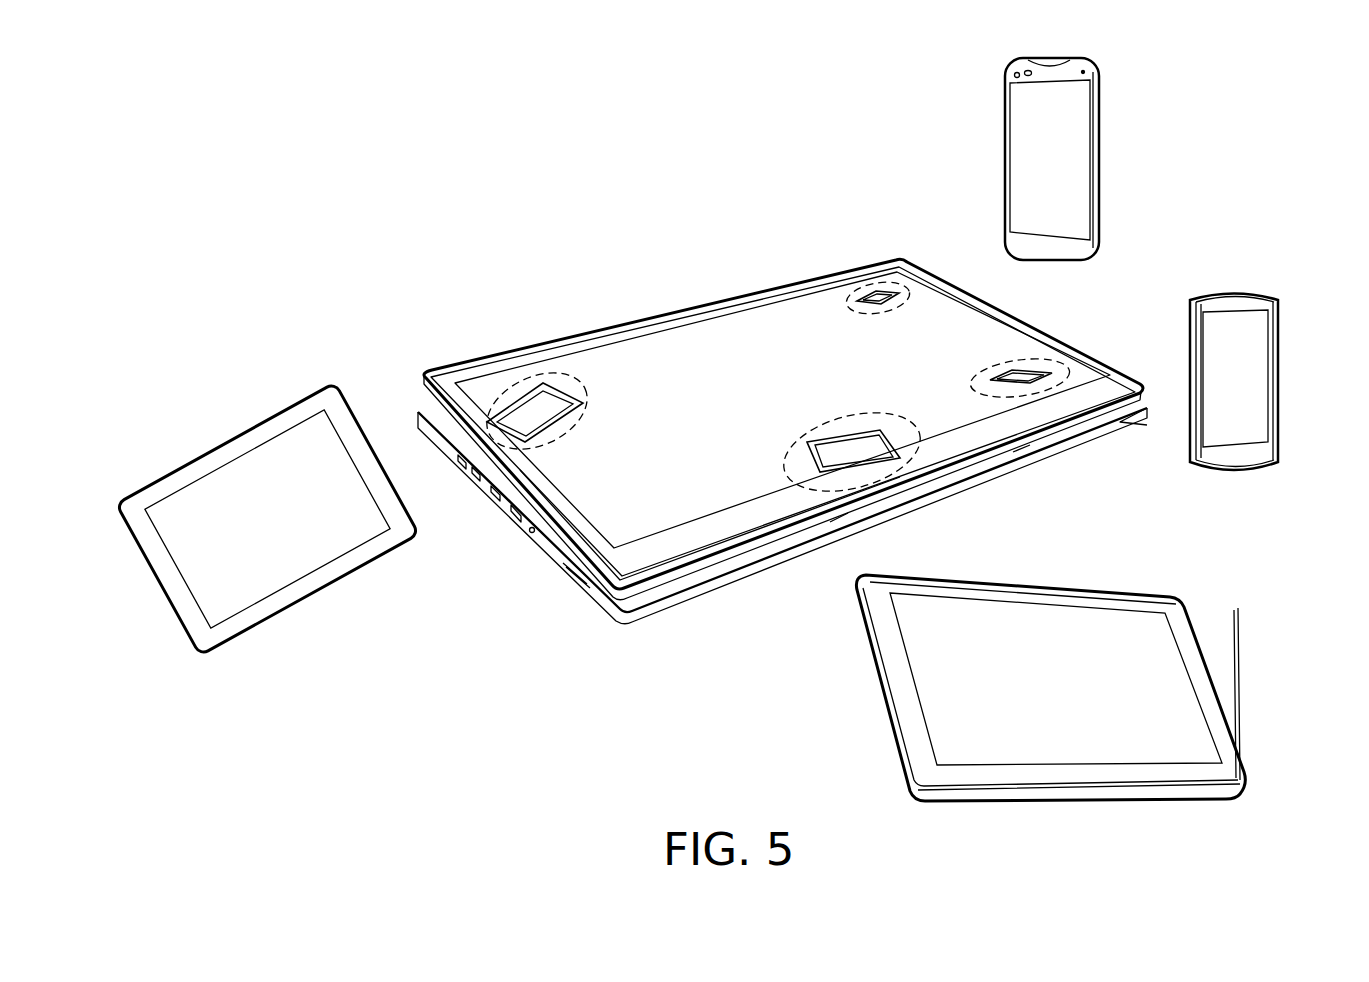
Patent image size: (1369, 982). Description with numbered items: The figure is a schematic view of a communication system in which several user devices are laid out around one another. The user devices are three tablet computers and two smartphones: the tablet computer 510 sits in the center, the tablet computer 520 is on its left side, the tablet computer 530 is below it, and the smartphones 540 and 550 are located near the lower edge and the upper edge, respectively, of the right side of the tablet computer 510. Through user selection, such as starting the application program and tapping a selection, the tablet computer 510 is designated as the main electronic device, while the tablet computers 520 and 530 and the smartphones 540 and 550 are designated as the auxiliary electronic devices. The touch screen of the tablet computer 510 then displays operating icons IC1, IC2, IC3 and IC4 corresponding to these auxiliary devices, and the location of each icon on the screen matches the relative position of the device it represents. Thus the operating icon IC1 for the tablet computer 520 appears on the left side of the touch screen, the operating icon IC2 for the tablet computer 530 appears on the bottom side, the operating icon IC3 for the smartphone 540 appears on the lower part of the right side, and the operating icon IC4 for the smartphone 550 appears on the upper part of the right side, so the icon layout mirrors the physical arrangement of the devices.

The tablet computer 510 is at (632, 616).
The tablet computer 520 is at (313, 600).
The tablet computer 530 is at (1102, 802).
The smartphone 540 is at (1279, 388).
The smartphone 550 is at (1002, 145).
The operating icon IC1 is at (515, 385).
The operating icon IC2 is at (877, 478).
The operating icon IC3 is at (1073, 357).
The operating icon IC4 is at (870, 280).